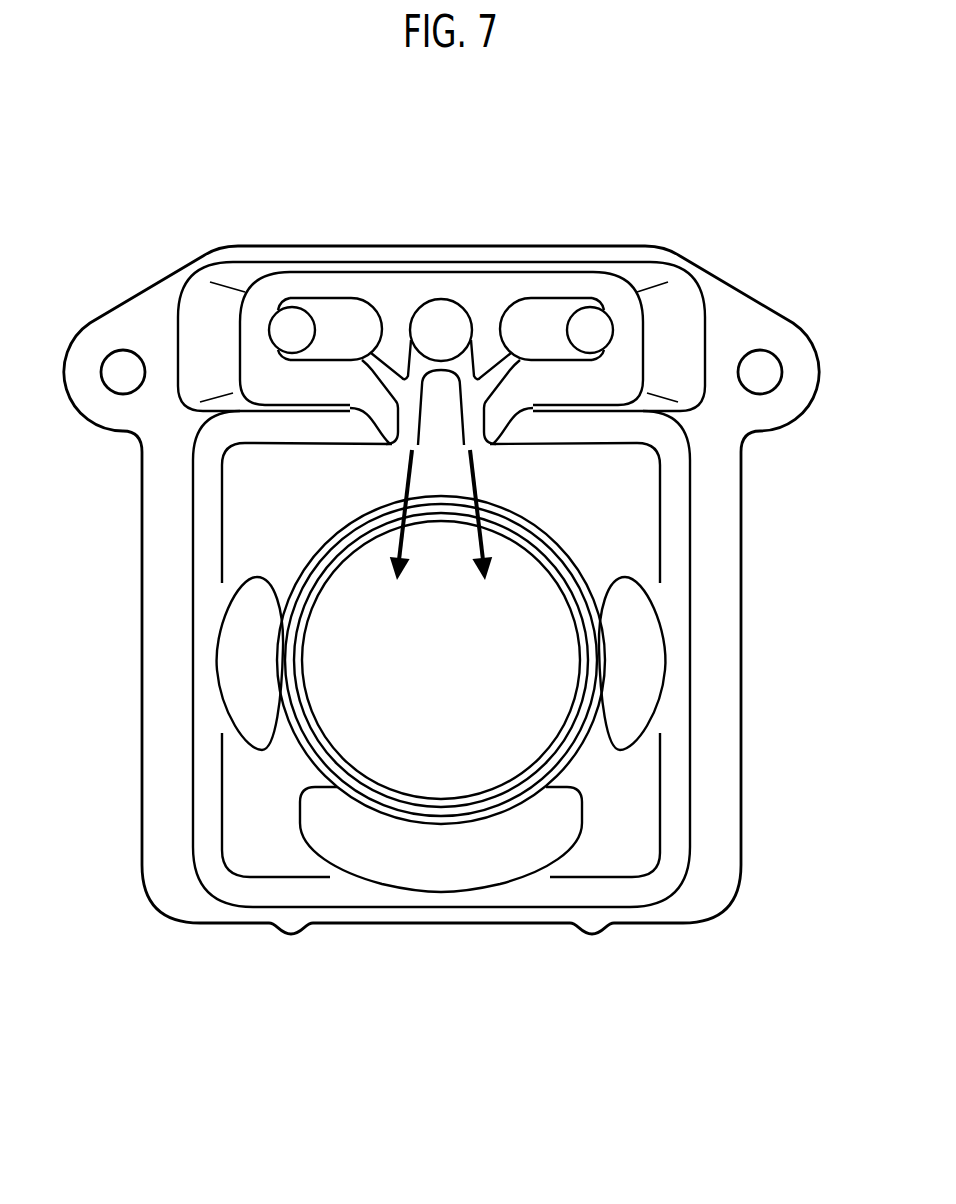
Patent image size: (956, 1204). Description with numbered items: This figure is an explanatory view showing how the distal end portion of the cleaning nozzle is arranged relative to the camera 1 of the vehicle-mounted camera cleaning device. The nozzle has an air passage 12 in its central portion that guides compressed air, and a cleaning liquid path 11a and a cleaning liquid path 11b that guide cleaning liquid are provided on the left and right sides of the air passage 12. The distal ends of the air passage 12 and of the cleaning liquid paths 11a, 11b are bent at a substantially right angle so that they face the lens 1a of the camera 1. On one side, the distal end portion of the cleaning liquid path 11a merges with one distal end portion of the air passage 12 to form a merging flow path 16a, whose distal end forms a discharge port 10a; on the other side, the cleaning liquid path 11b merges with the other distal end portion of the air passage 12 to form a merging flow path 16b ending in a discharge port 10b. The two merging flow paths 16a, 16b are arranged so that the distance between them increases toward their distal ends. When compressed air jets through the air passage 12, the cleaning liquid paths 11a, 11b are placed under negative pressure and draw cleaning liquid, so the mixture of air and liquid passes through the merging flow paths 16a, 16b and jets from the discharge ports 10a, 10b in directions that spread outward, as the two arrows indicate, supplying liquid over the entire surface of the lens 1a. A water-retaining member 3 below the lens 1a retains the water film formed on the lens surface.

The camera 1 is at (627, 808).
The lens 1a is at (497, 765).
The water-retaining member 3 is at (475, 865).
The discharge port 10a is at (407, 447).
The discharge port 10b is at (475, 447).
The cleaning liquid path 11a is at (290, 313).
The cleaning liquid path 11b is at (585, 315).
The air passage 12 is at (438, 308).
The merging flow path 16a is at (398, 422).
The merging flow path 16b is at (485, 422).